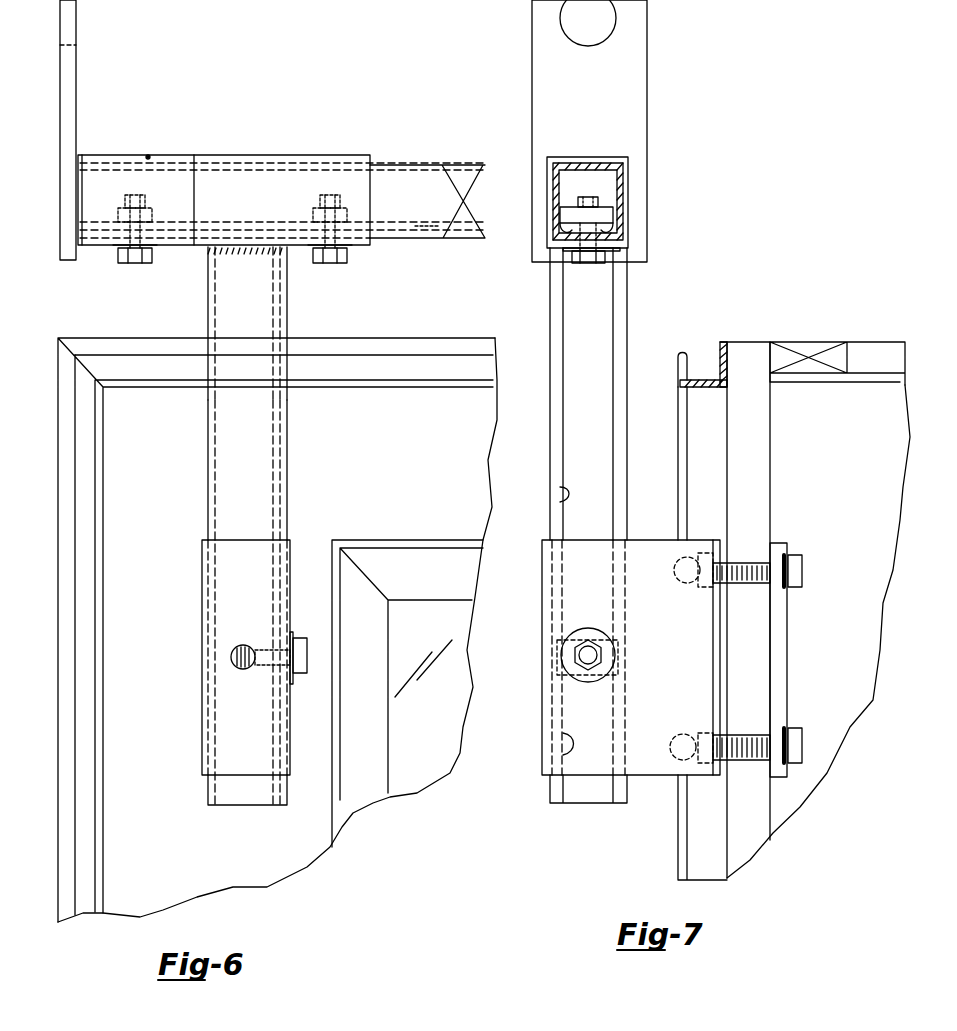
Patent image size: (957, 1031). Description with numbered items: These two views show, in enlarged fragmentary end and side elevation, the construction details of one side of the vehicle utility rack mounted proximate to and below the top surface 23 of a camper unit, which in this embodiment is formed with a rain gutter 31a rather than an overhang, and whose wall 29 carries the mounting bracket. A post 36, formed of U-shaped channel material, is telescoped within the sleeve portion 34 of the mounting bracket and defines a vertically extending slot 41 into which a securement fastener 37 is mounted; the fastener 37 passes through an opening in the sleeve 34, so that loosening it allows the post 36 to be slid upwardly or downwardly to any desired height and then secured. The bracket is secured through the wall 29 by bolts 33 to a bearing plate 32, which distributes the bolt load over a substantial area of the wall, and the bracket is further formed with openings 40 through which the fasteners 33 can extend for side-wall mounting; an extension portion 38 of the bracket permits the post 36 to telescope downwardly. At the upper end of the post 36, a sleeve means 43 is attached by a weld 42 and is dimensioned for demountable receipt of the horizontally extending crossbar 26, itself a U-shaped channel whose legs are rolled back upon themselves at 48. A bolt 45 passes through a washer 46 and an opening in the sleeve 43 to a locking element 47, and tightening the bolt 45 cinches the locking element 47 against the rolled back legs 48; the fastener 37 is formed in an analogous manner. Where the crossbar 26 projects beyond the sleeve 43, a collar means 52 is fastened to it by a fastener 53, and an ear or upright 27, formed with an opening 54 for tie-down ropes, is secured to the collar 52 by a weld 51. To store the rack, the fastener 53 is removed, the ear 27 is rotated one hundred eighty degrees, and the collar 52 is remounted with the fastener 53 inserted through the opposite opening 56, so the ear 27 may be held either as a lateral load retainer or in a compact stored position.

In FIG. 6, the top surface 23 is at (473, 340).
In FIG. 7, the top surface 23 is at (790, 341).
In FIG. 6, the crossbar 26 is at (407, 163).
In FIG. 7, the crossbar 26 is at (595, 165).
In FIG. 6, the ear portion 27 is at (78, 72).
In FIG. 7, the ear portion 27 is at (630, 80).
In FIG. 6, the wall panel 29 is at (406, 455).
In FIG. 7, the wall panel 29 is at (762, 447).
In FIG. 6, the rain gutter 31a is at (365, 348).
In FIG. 7, the rain gutter 31a is at (675, 400).
In FIG. 7, the bearing plate 32 is at (785, 637).
In FIG. 7, the bolt 33 is at (803, 555).
In FIG. 6, the sleeve portion 34 is at (202, 658).
In FIG. 7, the sleeve portion 34 is at (542, 607).
In FIG. 6, the post 36 is at (207, 472).
In FIG. 7, the post 36 is at (550, 417).
In FIG. 6, the securement fastener 37 is at (308, 655).
In FIG. 7, the securement fastener 37 is at (562, 655).
In FIG. 7, the extension portion 38 is at (660, 765).
In FIG. 7, the opening 40 is at (680, 578).
In FIG. 7, the slot 41 is at (560, 487).
In FIG. 6, the weld 42 is at (257, 253).
In FIG. 6, the sleeve means 43 is at (270, 209).
In FIG. 7, the sleeve means 43 is at (633, 217).
In FIG. 6, the bolt 45 is at (333, 265).
In FIG. 7, the bolt 45 is at (597, 263).
In FIG. 6, the washer 46 is at (350, 253).
In FIG. 7, the washer 46 is at (570, 248).
In FIG. 6, the locking element 47 is at (345, 213).
In FIG. 7, the locking element 47 is at (618, 210).
In FIG. 6, the rolled back legs 48 is at (420, 228).
In FIG. 7, the rolled back legs 48 is at (568, 238).
In FIG. 6, the weld 51 is at (80, 156).
In FIG. 6, the collar means 52 is at (187, 207).
In FIG. 6, the fastener 53 is at (122, 263).
In FIG. 6, the opening 54 is at (64, 44).
In FIG. 7, the opening 54 is at (610, 13).
In FIG. 6, the opening 56 is at (148, 156).